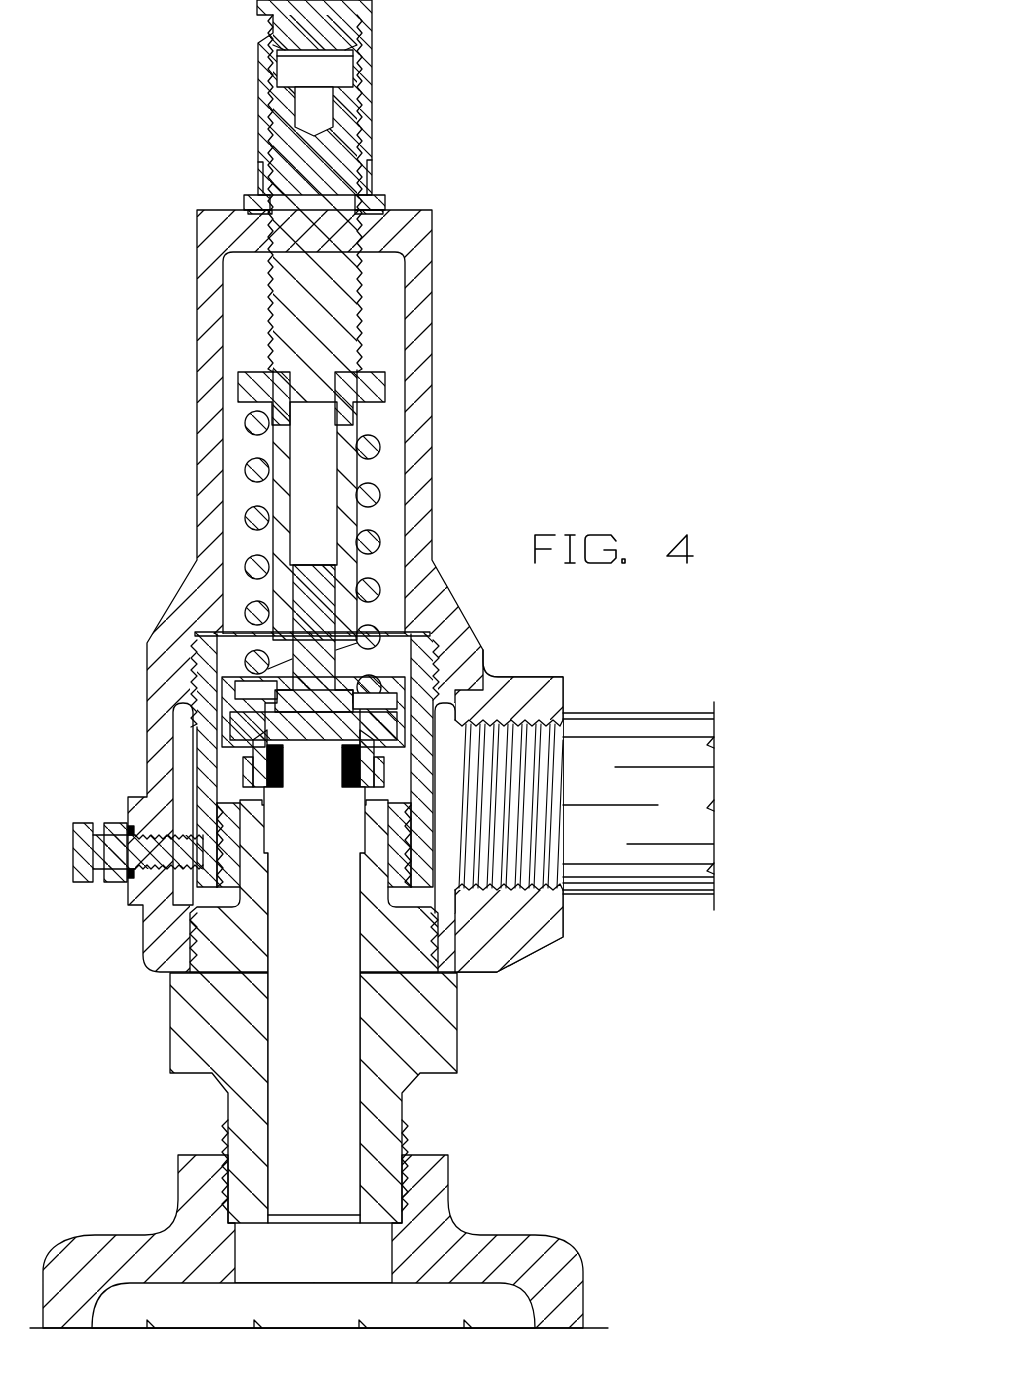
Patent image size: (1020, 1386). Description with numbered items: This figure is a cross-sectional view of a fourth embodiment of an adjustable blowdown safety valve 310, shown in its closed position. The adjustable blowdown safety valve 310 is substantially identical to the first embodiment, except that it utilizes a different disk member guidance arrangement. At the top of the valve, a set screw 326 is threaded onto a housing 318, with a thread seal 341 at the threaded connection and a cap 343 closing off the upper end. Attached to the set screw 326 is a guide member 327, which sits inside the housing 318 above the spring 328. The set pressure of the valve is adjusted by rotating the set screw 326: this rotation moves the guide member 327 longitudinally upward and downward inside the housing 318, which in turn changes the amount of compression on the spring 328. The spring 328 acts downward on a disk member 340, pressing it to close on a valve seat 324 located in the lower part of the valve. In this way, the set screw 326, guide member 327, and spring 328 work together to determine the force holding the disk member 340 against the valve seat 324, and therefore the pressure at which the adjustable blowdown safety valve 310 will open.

The adjustable blowdown safety valve 310 is at (482, 1030).
The housing 318 is at (160, 925).
The valve seat 324 is at (258, 763).
The set screw 326 is at (350, 296).
The guide member 327 is at (240, 388).
The spring 328 is at (255, 467).
The disk member 340 is at (248, 725).
The thread seal 341 is at (272, 216).
The cap 343 is at (264, 73).